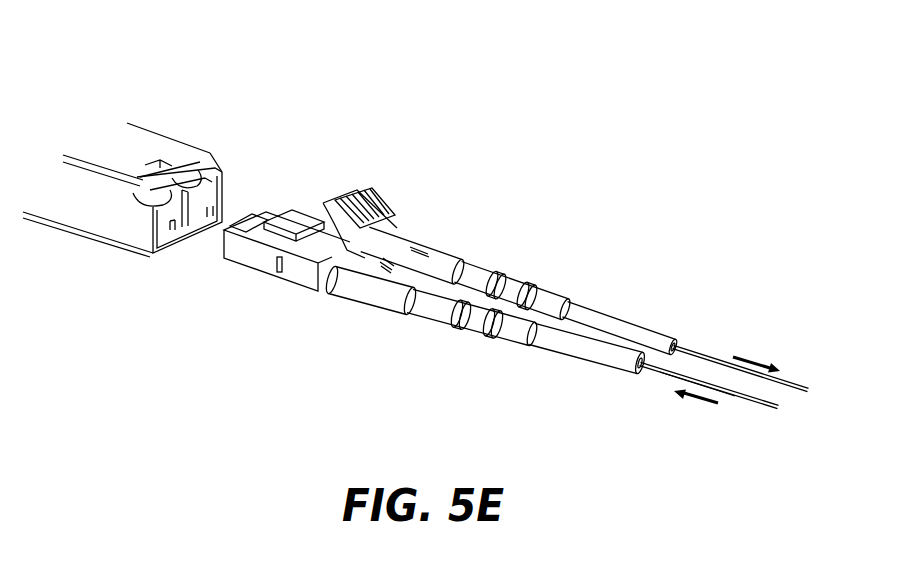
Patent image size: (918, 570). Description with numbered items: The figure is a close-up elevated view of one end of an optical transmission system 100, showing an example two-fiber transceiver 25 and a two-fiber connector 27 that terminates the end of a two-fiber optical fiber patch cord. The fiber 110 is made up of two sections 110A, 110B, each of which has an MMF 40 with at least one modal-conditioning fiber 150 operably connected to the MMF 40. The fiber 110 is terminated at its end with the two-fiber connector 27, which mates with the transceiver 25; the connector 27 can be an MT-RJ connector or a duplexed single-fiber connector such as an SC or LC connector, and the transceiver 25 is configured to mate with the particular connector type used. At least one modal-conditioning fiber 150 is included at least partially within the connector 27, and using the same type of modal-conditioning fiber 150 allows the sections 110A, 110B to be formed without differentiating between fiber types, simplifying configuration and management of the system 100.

The transceiver 25 is at (118, 148).
The two-fiber connector 27 is at (395, 188).
The fiber optic connector system 100 is at (583, 78).
The optical fiber 110 is at (655, 208).
The first fiber section 110A is at (793, 338).
The second fiber section 110B is at (750, 423).
The modal-conditioning fiber 150 is at (715, 362).
The MMF 40 is at (738, 400).